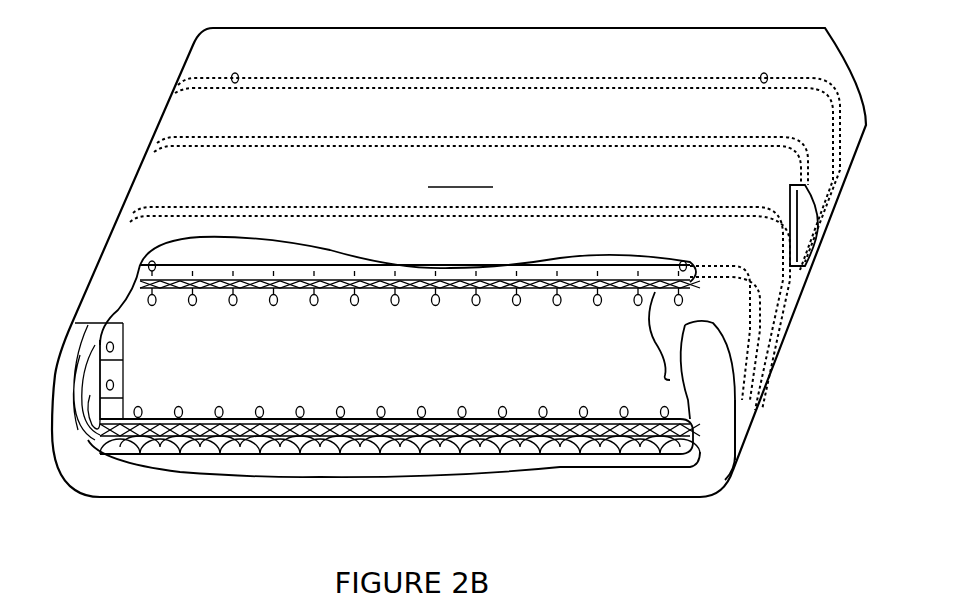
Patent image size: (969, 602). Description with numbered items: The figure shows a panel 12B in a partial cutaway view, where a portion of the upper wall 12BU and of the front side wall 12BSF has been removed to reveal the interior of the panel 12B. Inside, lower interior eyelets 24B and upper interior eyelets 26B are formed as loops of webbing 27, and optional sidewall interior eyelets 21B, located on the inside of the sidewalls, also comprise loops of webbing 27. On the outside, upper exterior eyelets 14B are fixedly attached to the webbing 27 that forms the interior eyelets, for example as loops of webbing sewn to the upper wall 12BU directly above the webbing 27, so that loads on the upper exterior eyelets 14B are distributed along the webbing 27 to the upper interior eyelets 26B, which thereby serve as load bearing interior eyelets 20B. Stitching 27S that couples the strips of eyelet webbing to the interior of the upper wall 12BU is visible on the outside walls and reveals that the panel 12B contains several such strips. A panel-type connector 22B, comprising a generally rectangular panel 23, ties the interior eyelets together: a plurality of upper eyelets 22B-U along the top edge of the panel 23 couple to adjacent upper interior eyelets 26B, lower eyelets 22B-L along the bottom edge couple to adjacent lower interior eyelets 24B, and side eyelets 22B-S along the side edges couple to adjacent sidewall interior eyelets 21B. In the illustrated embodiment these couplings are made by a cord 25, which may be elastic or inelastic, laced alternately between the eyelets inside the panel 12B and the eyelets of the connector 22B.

The panel 12B is at (151, 80).
The upper exterior eyelets 14B is at (237, 74).
The stitching 27S is at (150, 150).
The upper wall 12BU is at (460, 176).
The upper interior eyelets 26B is at (622, 277).
The load bearing interior eyelets 20B is at (162, 300).
The webbing 27 is at (356, 295).
The upper eyelets 22B-U is at (514, 305).
The panel-type connector 22B is at (386, 267).
The panel 23 is at (386, 267).
The lower eyelets 22B-L is at (272, 406).
The side eyelets 22B-S is at (118, 385).
The cord 25 is at (566, 418).
The sidewall interior eyelets 21B is at (80, 412).
The lower interior eyelets 24B is at (600, 455).
The front side wall 12BSF is at (708, 455).